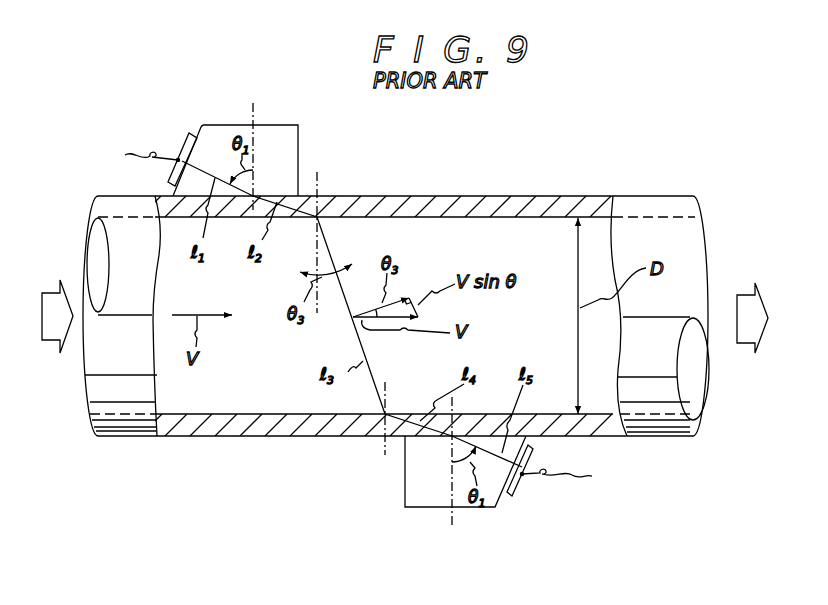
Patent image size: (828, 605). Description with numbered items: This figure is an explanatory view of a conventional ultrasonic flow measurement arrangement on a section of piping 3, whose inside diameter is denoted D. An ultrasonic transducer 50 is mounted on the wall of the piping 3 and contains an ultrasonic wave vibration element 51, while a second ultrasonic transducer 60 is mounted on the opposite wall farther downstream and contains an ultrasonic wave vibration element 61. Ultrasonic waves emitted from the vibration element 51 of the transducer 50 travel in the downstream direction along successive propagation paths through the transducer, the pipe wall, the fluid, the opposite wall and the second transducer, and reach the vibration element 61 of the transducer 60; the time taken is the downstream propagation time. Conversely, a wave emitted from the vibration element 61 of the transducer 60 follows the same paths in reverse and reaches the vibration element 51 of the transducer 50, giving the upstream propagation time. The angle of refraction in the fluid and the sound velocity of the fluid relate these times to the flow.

The piping 3 is at (425, 196).
The ultrasonic transducer 50 is at (226, 125).
The ultrasonic wave vibration element 51 is at (183, 143).
The ultrasonic transducer 60 is at (432, 508).
The ultrasonic wave vibration element 61 is at (517, 483).